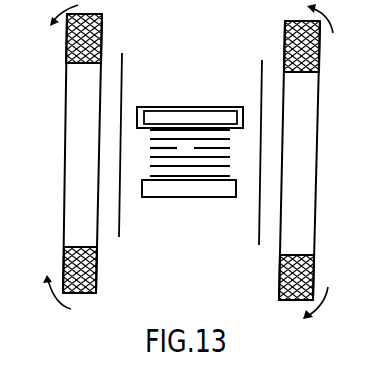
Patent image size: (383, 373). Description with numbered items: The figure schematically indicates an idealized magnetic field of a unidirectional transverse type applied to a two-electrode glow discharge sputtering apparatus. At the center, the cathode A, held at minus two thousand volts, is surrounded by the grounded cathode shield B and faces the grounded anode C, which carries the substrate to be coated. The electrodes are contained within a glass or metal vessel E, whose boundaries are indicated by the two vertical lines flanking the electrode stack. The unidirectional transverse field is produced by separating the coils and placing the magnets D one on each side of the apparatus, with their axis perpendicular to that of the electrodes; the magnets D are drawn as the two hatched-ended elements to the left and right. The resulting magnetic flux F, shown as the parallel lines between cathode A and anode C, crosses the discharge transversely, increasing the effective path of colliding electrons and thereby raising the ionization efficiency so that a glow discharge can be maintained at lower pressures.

The cathode A is at (190, 105).
The grounded cathode shield B is at (177, 108).
The grounded anode C is at (177, 197).
The magnets D is at (188, 161).
The glass or metal vessel E is at (120, 222).
The magnetic flux F is at (190, 153).